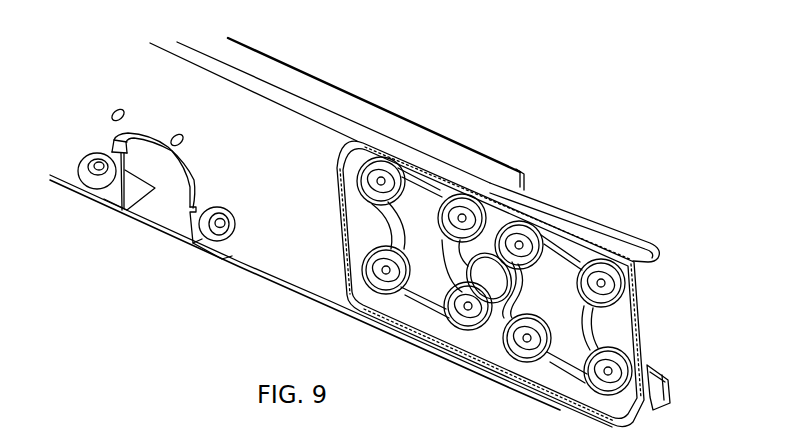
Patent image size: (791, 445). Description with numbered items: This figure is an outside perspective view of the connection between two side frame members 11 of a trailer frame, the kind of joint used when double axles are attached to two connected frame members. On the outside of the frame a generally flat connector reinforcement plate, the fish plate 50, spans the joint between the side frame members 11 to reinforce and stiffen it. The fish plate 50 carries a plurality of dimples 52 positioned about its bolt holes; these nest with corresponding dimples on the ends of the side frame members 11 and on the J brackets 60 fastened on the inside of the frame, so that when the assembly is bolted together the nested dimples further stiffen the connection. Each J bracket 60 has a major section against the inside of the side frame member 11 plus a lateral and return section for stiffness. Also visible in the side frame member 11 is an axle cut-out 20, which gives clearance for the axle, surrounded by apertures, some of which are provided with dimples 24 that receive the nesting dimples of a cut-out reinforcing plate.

The side frame member 11 is at (430, 133).
The axle cut-out 20 is at (168, 172).
The dimples 24 is at (231, 236).
The fish plate 50 is at (623, 335).
The dimples 52 is at (455, 212).
The J bracket 60 is at (613, 232).